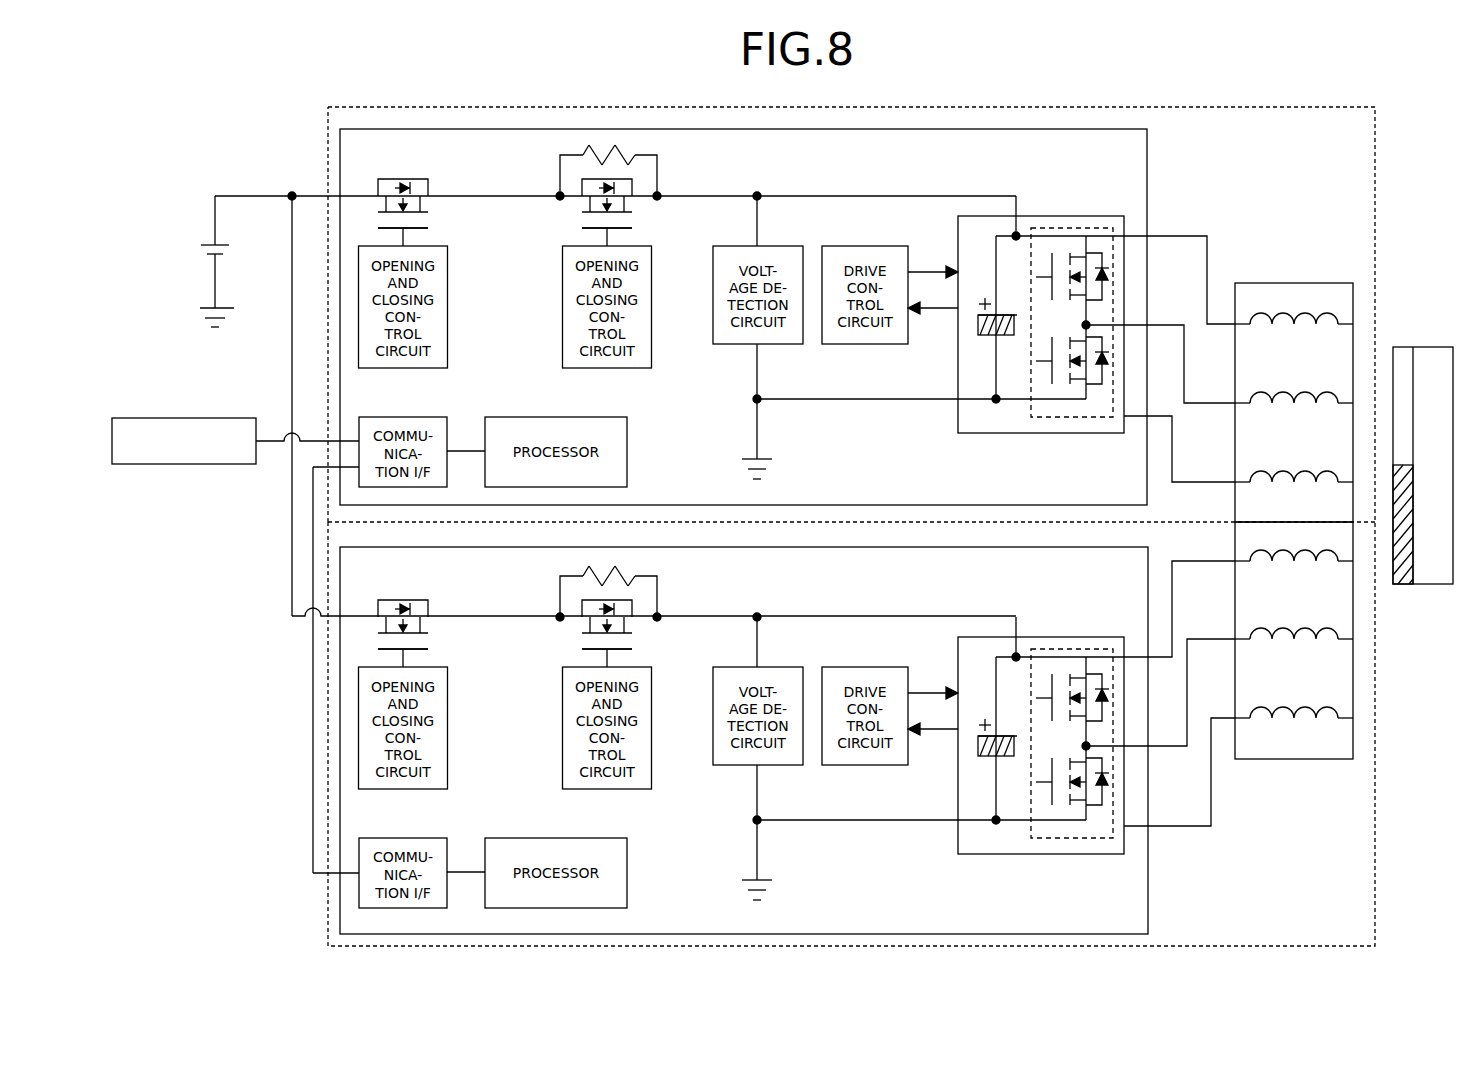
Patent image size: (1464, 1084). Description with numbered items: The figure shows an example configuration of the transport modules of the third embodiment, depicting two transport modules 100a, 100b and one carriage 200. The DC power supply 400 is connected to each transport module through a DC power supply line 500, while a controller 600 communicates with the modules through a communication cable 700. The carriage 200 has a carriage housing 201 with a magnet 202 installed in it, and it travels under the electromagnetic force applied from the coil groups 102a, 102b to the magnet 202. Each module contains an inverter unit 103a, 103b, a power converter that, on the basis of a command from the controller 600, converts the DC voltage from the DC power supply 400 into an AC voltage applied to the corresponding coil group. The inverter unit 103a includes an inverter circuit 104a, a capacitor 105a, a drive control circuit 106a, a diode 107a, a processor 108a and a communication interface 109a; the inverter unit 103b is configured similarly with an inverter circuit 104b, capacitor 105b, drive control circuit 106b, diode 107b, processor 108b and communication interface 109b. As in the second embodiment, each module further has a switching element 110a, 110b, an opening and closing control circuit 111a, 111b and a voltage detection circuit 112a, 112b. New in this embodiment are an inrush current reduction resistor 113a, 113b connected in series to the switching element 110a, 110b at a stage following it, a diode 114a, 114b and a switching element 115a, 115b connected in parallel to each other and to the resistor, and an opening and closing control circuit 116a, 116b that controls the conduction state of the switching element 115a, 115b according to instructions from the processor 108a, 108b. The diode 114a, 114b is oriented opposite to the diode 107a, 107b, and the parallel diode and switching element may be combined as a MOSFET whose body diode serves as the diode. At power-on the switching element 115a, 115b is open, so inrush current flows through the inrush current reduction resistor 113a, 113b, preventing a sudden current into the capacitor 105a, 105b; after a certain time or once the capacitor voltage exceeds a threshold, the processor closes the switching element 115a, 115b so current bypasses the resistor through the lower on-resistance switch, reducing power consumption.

The transport module 100a is at (1375, 160).
The transport module 100b is at (1375, 897).
The coil group 102a is at (1290, 283).
The coil group 102b is at (1290, 759).
The inverter unit 103a is at (1147, 168).
The inverter unit 103b is at (1148, 897).
The inverter circuit 104a is at (1055, 228).
The inverter circuit 104b is at (1096, 707).
The capacitor 105a is at (975, 323).
The capacitor 105b is at (939, 760).
The drive control circuit 106a is at (873, 246).
The drive control circuit 106b is at (890, 701).
The diode 107a is at (412, 176).
The diode 107b is at (442, 616).
The processor 108a is at (520, 417).
The processor 108b is at (537, 852).
The communication interface 109a is at (395, 417).
The communication interface 109b is at (416, 852).
The switching element 110a is at (448, 227).
The switching element 110b is at (448, 652).
The opening and closing control circuit 111a is at (448, 308).
The opening and closing control circuit 111b is at (443, 728).
The voltage detection circuit 112a is at (777, 246).
The voltage detection circuit 112b is at (899, 756).
The inrush current reduction resistor 113a is at (623, 147).
The inrush current reduction resistor 113b is at (686, 584).
The diode 114a is at (626, 178).
The diode 114b is at (661, 622).
The switching element 115a is at (652, 227).
The switching element 115b is at (654, 648).
The opening and closing control circuit 116a is at (630, 368).
The opening and closing control circuit 116b is at (629, 756).
The carriage 200 is at (1344, 517).
The carriage housing 201 is at (1435, 347).
The magnet 202 is at (1403, 584).
The DC power supply 400 is at (200, 245).
The DC power supply line 500 is at (243, 196).
The controller 600 is at (185, 418).
The communication cable 700 is at (313, 708).